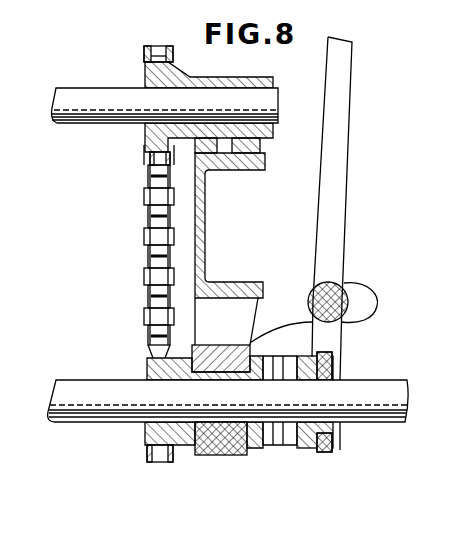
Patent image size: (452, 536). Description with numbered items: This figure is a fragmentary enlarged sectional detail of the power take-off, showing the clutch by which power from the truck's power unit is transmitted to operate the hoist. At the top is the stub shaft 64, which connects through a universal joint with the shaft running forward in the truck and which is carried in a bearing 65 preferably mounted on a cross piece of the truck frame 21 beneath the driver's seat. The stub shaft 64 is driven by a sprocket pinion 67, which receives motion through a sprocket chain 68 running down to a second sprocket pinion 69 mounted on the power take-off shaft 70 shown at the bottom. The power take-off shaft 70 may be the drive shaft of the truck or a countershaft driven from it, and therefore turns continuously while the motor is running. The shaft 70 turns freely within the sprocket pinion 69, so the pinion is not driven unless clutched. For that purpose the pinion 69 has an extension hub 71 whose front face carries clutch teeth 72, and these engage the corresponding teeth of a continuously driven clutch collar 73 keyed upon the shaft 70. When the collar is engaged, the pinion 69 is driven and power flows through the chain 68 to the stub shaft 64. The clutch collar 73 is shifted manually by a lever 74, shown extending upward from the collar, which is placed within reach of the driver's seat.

The truck frame 21 is at (204, 238).
The stub shaft 64 is at (80, 115).
The bearing 65 is at (262, 78).
The sprocket pinion 67 is at (146, 142).
The sprocket chain 68 is at (146, 250).
The sprocket pinion 69 is at (157, 437).
The power take-off shaft 70 is at (70, 412).
The extension hub 71 is at (240, 430).
The clutch teeth 72 is at (267, 440).
The clutch collar 73 is at (340, 375).
The lever 74 is at (340, 217).